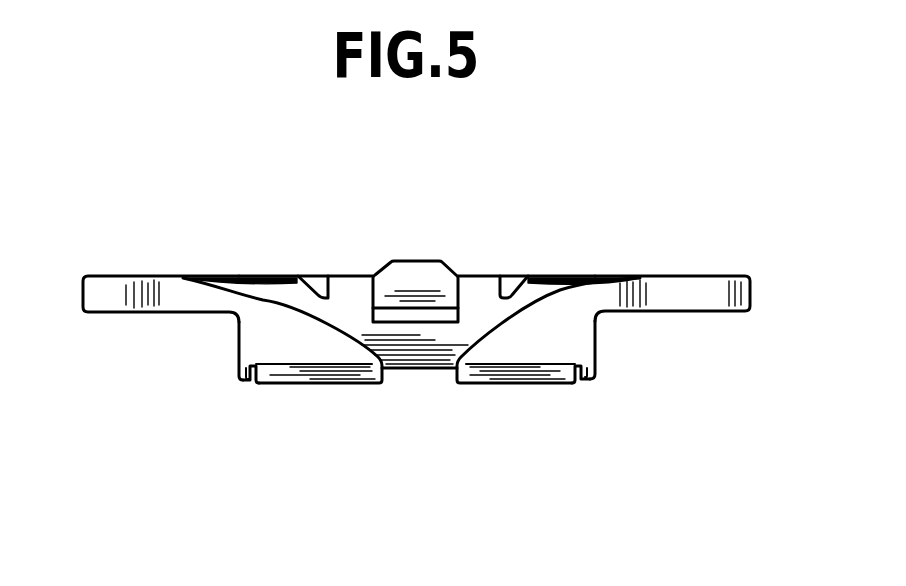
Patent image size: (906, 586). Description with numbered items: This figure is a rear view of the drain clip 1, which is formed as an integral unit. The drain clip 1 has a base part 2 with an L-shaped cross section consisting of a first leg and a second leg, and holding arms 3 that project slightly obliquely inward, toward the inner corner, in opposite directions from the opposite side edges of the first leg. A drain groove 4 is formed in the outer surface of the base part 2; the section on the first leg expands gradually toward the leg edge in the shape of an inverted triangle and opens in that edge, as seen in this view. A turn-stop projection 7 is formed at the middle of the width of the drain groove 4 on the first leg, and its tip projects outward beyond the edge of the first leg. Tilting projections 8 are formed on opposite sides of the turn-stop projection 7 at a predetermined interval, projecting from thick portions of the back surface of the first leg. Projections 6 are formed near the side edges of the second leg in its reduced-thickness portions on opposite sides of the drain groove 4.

The drain clip 1 is at (611, 212).
The base part 2 is at (582, 345).
The holding arms 3 is at (120, 283).
The drain groove 4 is at (483, 287).
The projections 6 is at (245, 385).
The turn-stop projection 7 is at (412, 275).
The tilting projections 8 is at (317, 285).